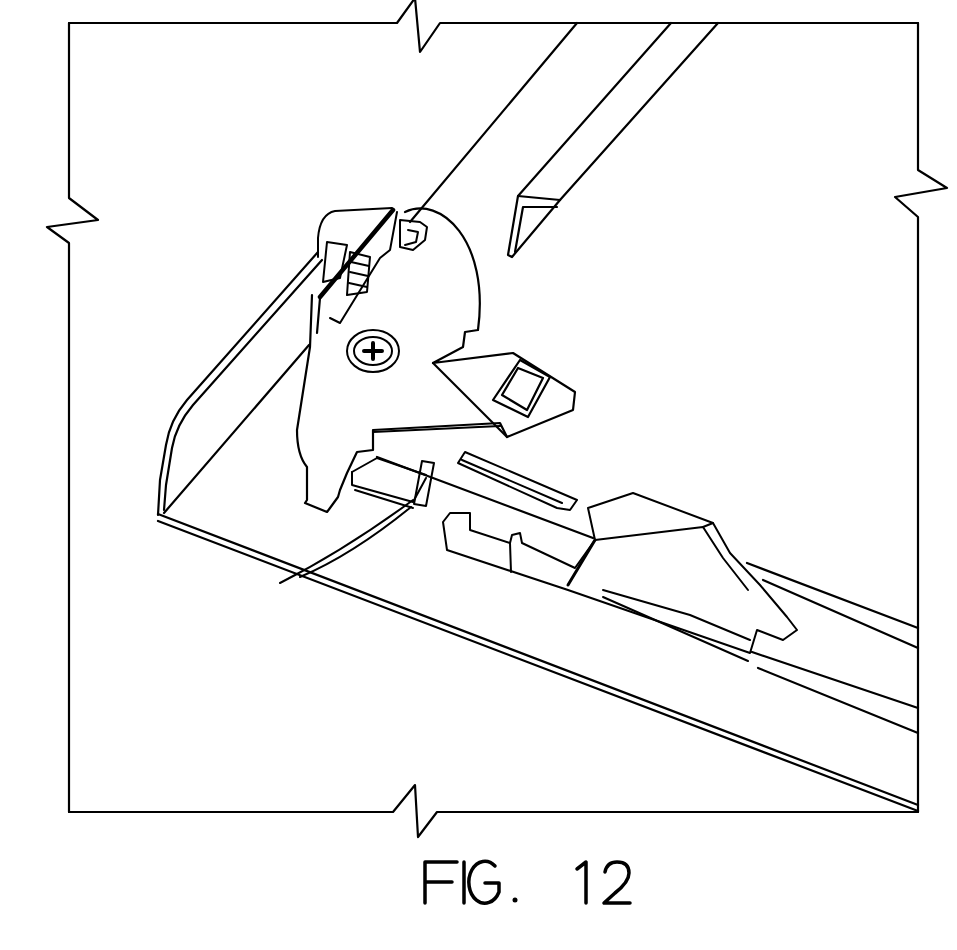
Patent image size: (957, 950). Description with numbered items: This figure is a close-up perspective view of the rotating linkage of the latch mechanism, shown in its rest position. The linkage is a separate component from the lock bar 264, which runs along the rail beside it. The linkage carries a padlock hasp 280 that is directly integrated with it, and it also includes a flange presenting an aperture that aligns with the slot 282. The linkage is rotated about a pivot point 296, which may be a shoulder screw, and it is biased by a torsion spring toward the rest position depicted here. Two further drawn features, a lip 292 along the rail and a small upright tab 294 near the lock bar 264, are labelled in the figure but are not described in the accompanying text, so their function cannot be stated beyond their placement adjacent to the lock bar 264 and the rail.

The lock bar 264 is at (597, 572).
The padlock hasp 280 is at (330, 210).
The slot 282 is at (318, 253).
The lip 292 is at (303, 573).
The tab 294 is at (410, 500).
The pivot point 296 is at (393, 335).